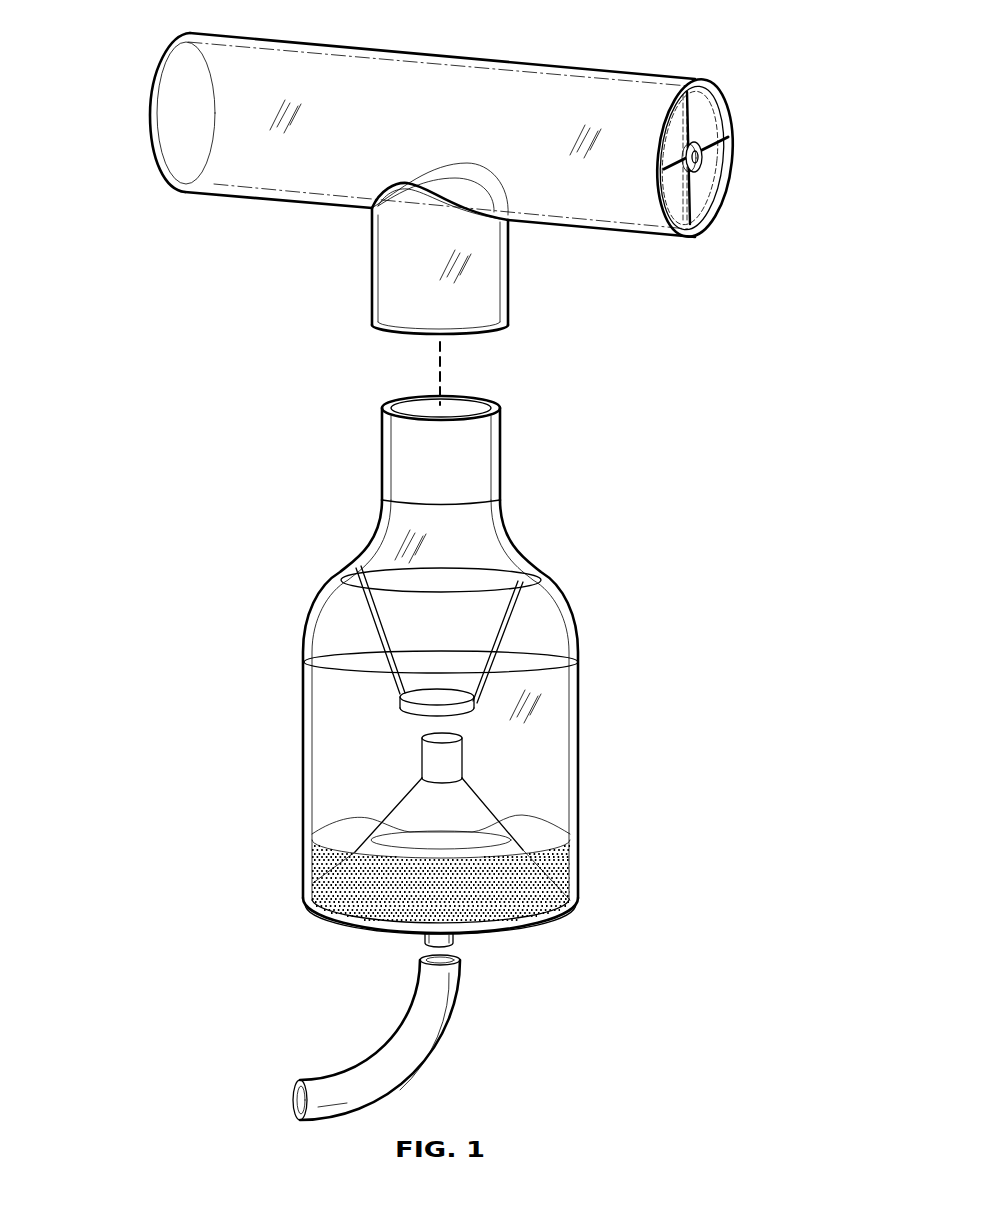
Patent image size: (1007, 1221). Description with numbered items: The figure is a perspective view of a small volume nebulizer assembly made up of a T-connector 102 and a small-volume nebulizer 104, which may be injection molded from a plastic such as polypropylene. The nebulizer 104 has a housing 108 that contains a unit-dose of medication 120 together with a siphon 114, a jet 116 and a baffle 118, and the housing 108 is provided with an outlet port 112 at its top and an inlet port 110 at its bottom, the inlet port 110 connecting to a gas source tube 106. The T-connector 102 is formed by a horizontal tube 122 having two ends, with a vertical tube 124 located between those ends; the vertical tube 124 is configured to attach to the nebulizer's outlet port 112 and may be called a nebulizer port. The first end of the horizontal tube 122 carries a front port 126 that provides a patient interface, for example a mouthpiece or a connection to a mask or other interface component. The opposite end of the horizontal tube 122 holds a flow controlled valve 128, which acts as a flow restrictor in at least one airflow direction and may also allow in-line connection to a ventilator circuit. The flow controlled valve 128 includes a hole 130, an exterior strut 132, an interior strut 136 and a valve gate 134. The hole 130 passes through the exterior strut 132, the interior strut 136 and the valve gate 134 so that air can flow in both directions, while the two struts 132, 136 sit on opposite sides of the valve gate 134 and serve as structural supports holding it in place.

The T-connector 102 is at (656, 49).
The small-volume nebulizer 104 is at (289, 778).
The gas source tube 106 is at (362, 1060).
The housing 108 is at (578, 775).
The inlet port 110 is at (457, 940).
The outlet port 112 is at (382, 453).
The siphon 114 is at (397, 802).
The jet 116 is at (422, 752).
The baffle 118 is at (445, 688).
The medication 120 is at (508, 812).
The horizontal tube 122 is at (508, 62).
The vertical tube 124 is at (370, 265).
The front port 126 is at (152, 112).
The flow controlled valve 128 is at (744, 138).
The hole 130 is at (703, 158).
The exterior strut 132 is at (670, 180).
The valve gate 134 is at (720, 207).
The interior strut 136 is at (698, 117).